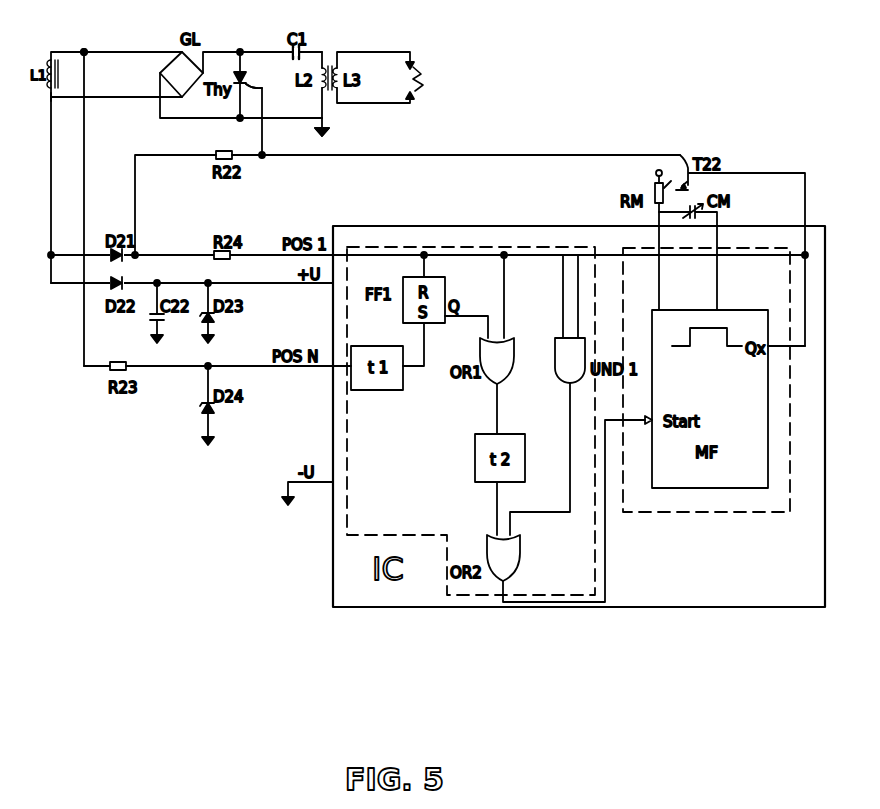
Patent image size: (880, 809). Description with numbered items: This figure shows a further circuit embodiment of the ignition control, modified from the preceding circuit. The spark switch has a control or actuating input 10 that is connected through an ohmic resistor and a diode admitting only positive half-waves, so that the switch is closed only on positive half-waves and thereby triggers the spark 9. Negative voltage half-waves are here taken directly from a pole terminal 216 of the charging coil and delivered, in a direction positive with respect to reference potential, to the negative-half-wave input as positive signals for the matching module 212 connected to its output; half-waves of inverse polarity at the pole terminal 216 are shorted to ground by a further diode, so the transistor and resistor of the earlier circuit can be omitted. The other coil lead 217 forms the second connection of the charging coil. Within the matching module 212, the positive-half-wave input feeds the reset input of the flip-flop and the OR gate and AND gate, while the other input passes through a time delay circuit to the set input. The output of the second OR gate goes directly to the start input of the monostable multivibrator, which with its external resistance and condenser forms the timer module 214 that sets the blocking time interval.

The pole terminal of the charging coil 216 is at (84, 52).
The second transformer lead terminal 217 is at (51, 97).
The control or actuating input 10 is at (248, 86).
The spark 9 is at (426, 78).
The matching module 212 is at (469, 247).
The timer module 214 is at (752, 248).